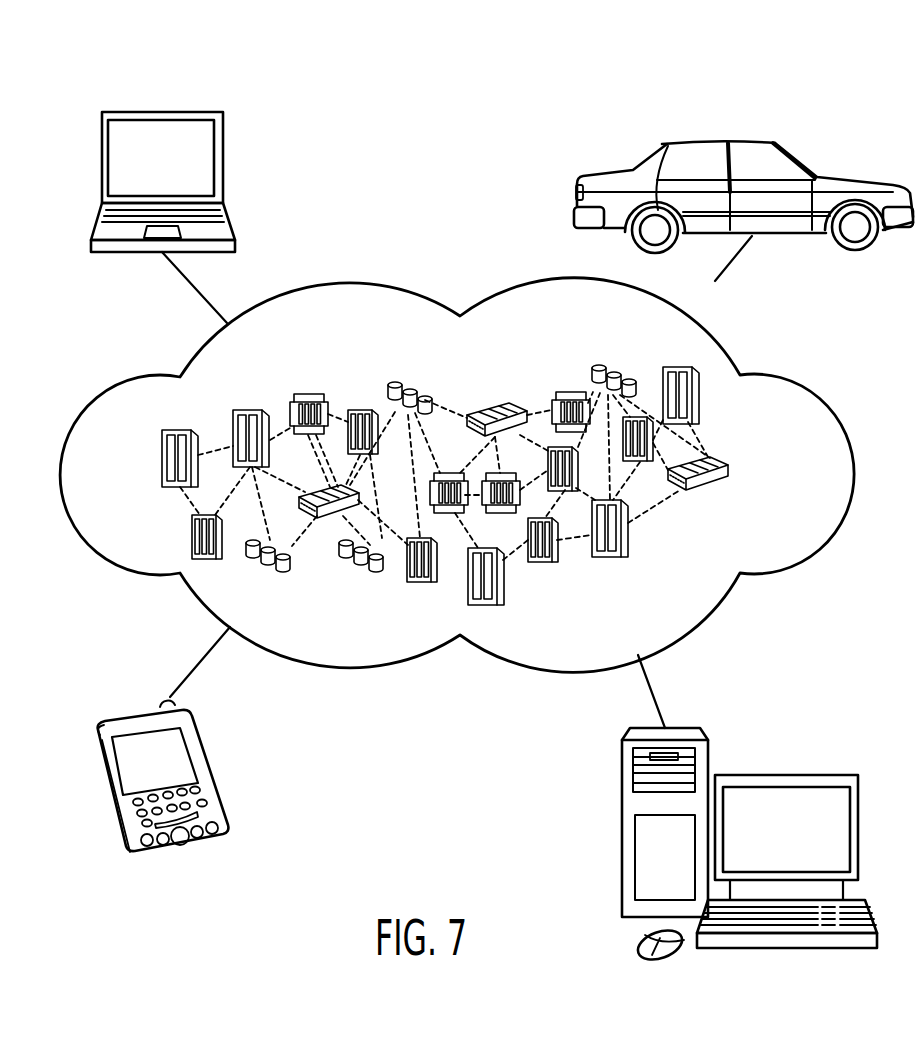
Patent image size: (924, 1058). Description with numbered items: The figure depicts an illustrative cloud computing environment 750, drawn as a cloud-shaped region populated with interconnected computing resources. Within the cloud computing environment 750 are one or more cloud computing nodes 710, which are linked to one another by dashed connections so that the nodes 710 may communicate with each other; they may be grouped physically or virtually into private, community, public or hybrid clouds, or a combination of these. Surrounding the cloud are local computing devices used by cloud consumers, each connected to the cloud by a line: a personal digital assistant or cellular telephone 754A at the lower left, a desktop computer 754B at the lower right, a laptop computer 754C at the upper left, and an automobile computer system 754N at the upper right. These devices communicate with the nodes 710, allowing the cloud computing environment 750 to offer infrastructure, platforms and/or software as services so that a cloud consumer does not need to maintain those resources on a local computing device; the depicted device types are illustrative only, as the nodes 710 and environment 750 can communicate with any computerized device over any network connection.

The cloud computing environment 750 is at (801, 382).
The cloud computing node 710 is at (737, 473).
The personal digital assistant or cellular telephone 754A is at (142, 712).
The desktop computer 754B is at (786, 775).
The laptop computer 754C is at (160, 110).
The automobile computer system 754N is at (720, 138).